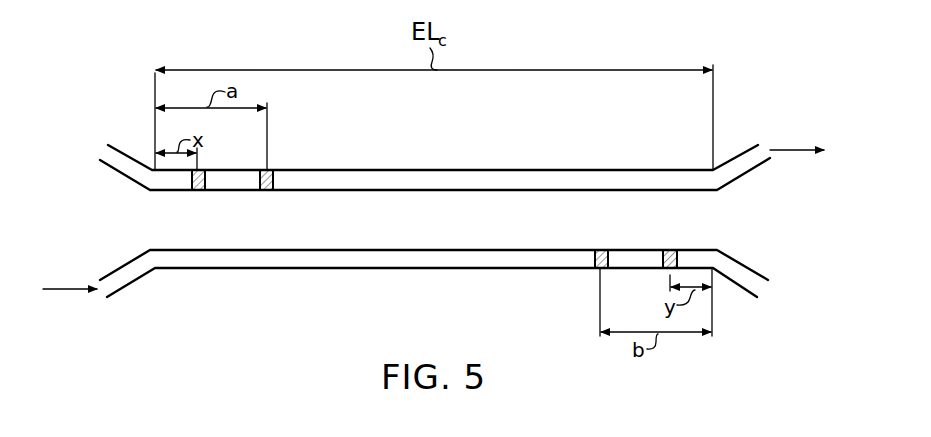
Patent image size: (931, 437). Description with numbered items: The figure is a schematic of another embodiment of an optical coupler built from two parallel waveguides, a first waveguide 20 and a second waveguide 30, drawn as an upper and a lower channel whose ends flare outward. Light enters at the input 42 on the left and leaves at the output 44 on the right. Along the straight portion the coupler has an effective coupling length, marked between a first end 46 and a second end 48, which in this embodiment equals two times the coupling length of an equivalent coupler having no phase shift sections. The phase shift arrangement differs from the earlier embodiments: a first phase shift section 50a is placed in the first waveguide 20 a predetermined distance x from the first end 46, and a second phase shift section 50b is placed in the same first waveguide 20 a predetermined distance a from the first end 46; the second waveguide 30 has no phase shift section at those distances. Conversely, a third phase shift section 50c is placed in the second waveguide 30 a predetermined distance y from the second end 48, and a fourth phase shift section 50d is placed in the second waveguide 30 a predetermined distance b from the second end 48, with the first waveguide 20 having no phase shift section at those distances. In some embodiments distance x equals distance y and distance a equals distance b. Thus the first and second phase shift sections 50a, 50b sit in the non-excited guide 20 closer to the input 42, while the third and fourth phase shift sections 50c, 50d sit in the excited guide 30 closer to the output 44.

The first waveguide 20 is at (344, 191).
The second waveguide 30 is at (399, 249).
The input 42 is at (69, 289).
The output 44 is at (790, 150).
The first end of the effective coupling length 46 is at (155, 74).
The second end of the effective coupling length 48 is at (714, 74).
The first phase shift section 50a is at (197, 192).
The second phase shift section 50b is at (266, 192).
The third phase shift section 50c is at (669, 249).
The fourth phase shift section 50d is at (601, 249).